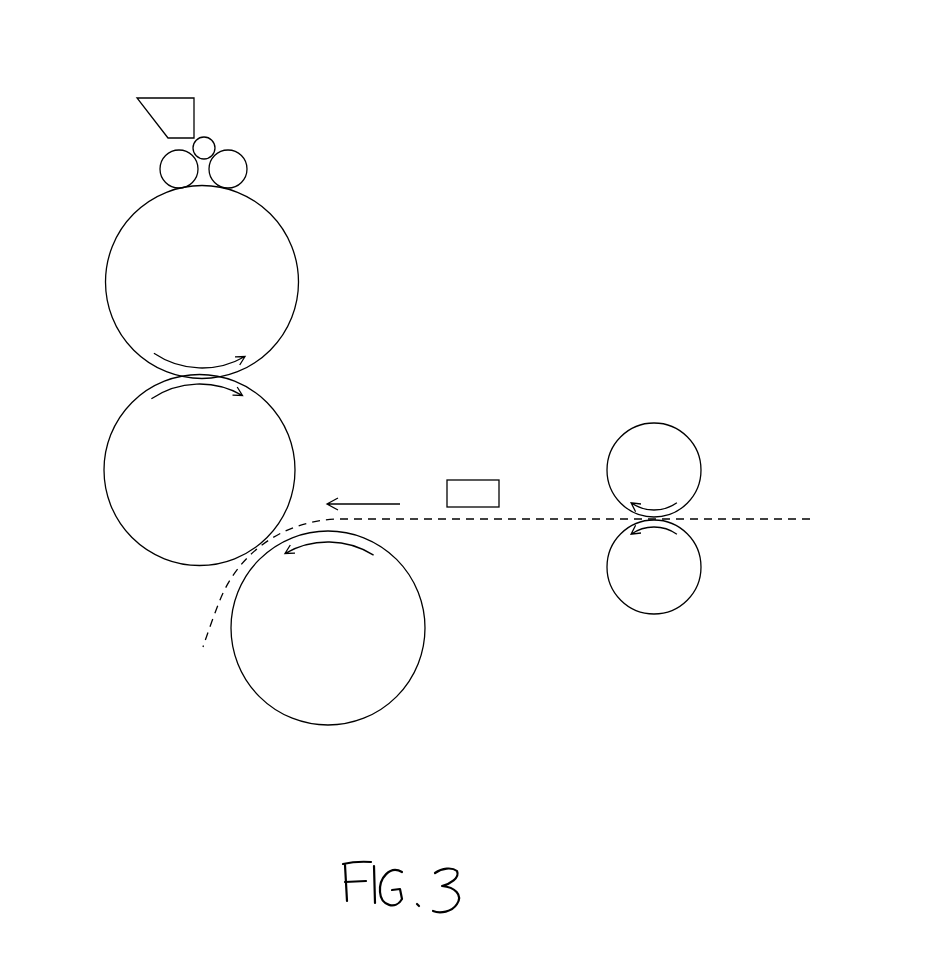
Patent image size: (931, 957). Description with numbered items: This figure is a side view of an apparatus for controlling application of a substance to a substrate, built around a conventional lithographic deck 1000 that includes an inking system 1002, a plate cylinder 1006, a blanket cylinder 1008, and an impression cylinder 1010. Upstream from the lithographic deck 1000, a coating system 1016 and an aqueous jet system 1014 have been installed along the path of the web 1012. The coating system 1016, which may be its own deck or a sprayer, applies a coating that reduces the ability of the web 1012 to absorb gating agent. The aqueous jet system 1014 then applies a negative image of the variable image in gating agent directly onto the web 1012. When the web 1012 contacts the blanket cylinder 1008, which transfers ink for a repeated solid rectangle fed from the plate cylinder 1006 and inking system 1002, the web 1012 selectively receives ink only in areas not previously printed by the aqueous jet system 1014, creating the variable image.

The lithographic deck 1000 is at (435, 25).
The inking system 1002 is at (208, 127).
The plate cylinder 1006 is at (142, 231).
The blanket cylinder 1008 is at (137, 432).
The impression cylinder 1010 is at (360, 678).
The web 1012 is at (435, 520).
The aqueous jet system 1014 is at (470, 480).
The coating system 1016 is at (713, 497).